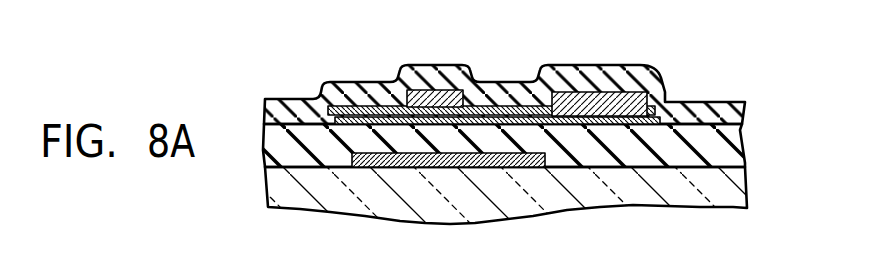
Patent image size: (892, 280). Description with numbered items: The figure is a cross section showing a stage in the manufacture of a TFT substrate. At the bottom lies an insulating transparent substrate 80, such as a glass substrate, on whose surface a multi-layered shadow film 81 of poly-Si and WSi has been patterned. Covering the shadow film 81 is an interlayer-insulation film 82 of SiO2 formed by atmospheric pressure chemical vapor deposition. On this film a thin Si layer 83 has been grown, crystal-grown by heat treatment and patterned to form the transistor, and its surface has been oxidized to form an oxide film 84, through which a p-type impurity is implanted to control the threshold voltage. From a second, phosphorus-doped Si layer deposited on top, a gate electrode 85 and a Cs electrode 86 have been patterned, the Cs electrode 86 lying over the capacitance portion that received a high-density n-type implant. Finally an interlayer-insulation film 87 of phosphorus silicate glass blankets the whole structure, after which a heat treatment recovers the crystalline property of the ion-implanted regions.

The insulating transparent substrate 80 is at (727, 187).
The multi-layered shadow film 81 is at (489, 160).
The interlayer-insulation film 82 is at (725, 140).
The Si layer 83 is at (597, 120).
The oxide film 84 is at (362, 112).
The gate electrode 85 is at (436, 106).
The Cs electrode 86 is at (600, 104).
The interlayer-insulation film 87 is at (740, 108).